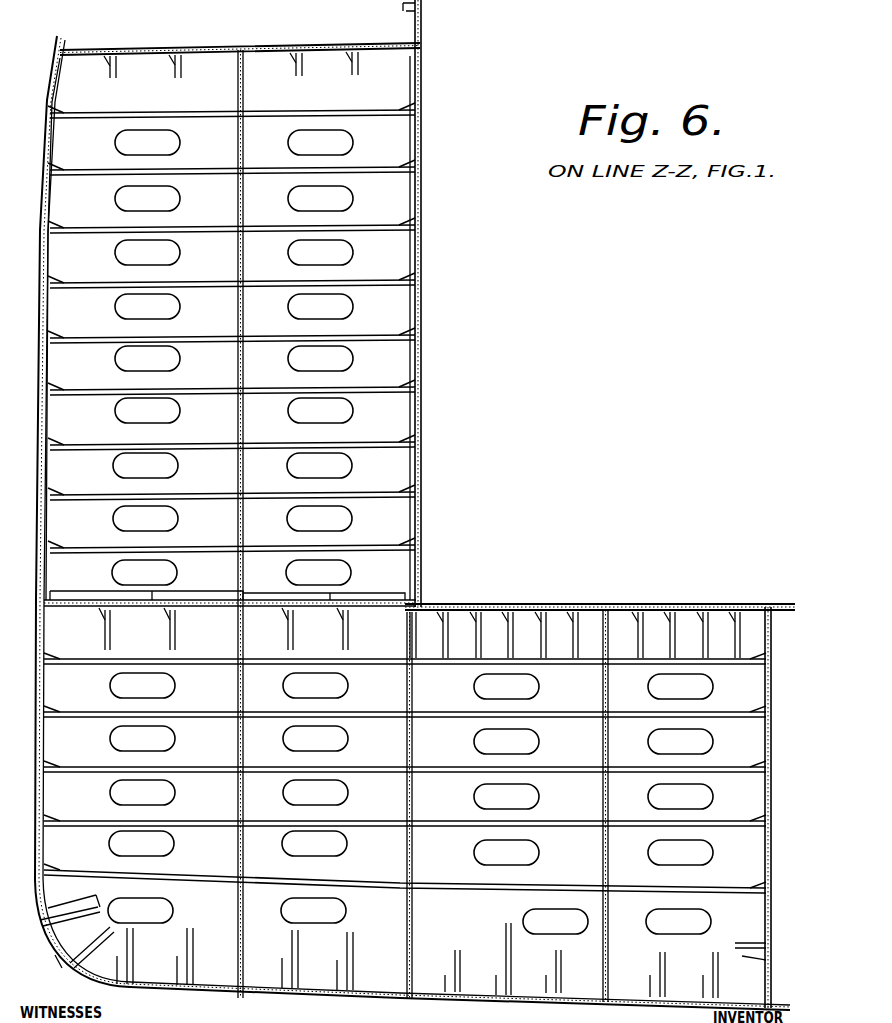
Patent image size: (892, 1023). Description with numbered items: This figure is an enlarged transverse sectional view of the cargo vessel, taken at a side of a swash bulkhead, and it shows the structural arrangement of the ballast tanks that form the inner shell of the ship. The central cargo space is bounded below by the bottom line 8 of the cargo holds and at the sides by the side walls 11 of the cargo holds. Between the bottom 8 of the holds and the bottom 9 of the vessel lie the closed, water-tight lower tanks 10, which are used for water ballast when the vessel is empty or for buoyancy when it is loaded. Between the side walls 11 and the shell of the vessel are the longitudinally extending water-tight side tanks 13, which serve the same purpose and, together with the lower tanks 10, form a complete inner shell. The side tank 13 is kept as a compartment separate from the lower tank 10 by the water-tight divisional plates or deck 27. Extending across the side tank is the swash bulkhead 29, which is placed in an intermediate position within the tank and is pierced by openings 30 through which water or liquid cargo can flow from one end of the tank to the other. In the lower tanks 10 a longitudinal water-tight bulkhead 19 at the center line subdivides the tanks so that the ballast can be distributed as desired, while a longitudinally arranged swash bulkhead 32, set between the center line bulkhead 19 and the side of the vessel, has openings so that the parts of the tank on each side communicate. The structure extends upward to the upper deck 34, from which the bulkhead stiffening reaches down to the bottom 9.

The bottom line of the cargo holds 8 is at (632, 612).
The bottom of the vessel 9 is at (388, 997).
The lower tanks 10 is at (520, 806).
The side walls of the cargo holds 11 is at (412, 221).
The side tanks 13 is at (383, 303).
The longitudinal water-tight bulkhead 19 is at (768, 715).
The water-tight divisional plates or deck 27 is at (210, 610).
The swash bulkhead 29 is at (405, 498).
The openings 30 is at (168, 362).
The longitudinally arranged swash bulkhead 32 is at (412, 853).
The upper deck 34 is at (270, 38).